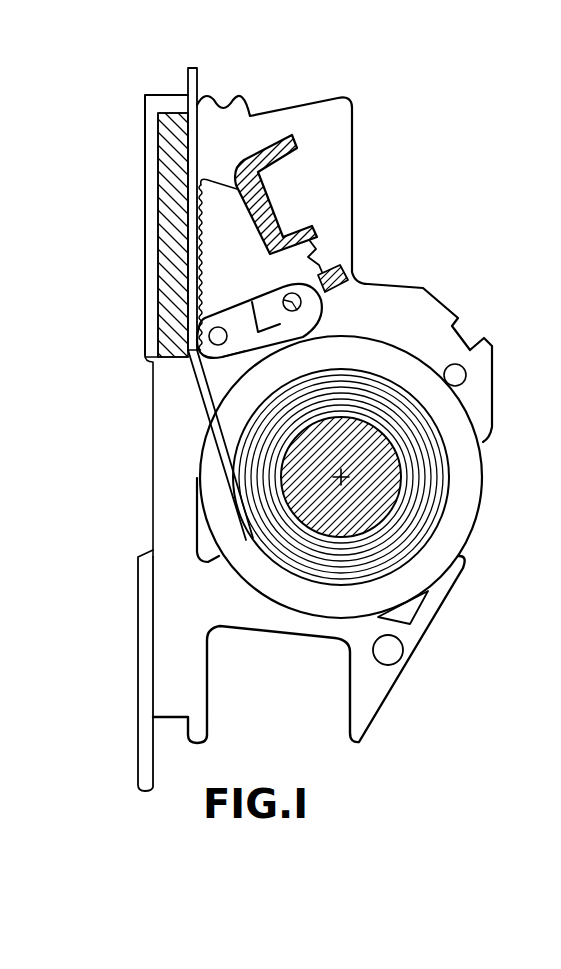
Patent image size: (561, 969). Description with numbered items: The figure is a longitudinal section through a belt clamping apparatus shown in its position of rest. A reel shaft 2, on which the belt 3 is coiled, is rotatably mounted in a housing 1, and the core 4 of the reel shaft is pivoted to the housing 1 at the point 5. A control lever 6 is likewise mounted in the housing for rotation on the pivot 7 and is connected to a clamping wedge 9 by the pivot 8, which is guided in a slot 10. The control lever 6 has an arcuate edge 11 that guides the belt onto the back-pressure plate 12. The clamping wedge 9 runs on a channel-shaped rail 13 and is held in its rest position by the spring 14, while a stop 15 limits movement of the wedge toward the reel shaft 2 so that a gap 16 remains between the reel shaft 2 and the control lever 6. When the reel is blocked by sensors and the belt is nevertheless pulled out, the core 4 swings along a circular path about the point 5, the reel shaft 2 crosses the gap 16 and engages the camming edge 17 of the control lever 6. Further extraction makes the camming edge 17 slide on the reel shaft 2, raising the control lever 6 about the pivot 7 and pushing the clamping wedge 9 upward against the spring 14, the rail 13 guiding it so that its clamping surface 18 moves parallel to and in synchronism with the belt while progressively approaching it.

The housing 1 is at (163, 658).
The reel shaft 2 is at (467, 494).
The belt 3 is at (197, 74).
The core 4 is at (341, 477).
The point 5 is at (455, 375).
The control lever 6 is at (333, 317).
The pivot 7 is at (190, 354).
The pivot 8 is at (312, 293).
The clamping wedge 9 is at (224, 223).
The slot 10 is at (300, 286).
The arcuate edge 11 is at (190, 368).
The back-pressure plate 12 is at (177, 137).
The channel-shaped rail 13 is at (354, 103).
The spring 14 is at (316, 245).
The stop 15 is at (203, 340).
The gap 16 is at (325, 328).
The camming edge 17 is at (243, 360).
The clamping surface 18 is at (188, 244).